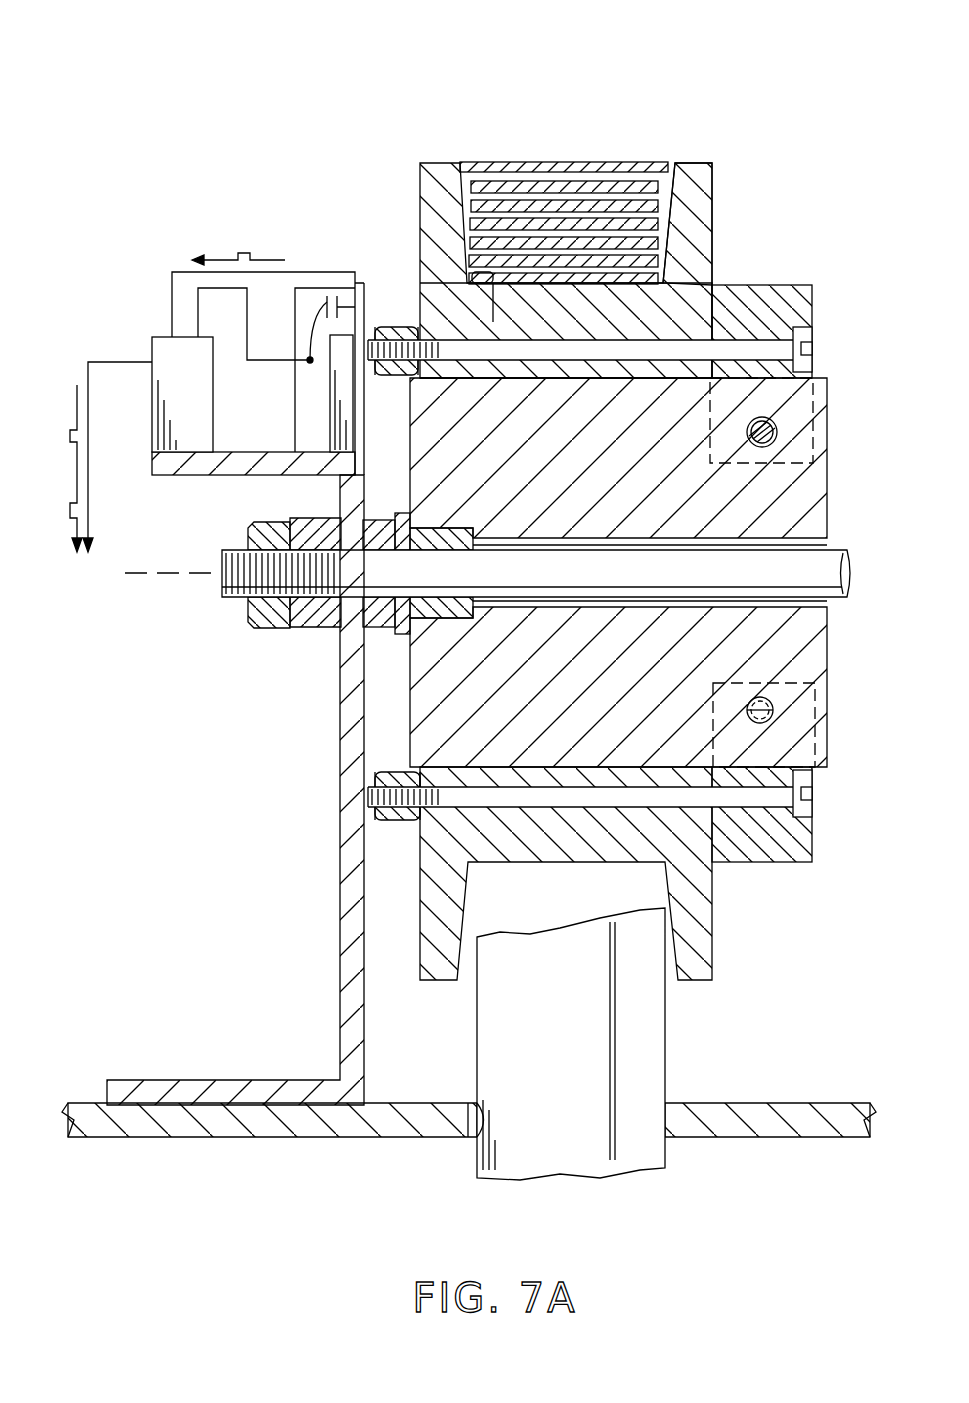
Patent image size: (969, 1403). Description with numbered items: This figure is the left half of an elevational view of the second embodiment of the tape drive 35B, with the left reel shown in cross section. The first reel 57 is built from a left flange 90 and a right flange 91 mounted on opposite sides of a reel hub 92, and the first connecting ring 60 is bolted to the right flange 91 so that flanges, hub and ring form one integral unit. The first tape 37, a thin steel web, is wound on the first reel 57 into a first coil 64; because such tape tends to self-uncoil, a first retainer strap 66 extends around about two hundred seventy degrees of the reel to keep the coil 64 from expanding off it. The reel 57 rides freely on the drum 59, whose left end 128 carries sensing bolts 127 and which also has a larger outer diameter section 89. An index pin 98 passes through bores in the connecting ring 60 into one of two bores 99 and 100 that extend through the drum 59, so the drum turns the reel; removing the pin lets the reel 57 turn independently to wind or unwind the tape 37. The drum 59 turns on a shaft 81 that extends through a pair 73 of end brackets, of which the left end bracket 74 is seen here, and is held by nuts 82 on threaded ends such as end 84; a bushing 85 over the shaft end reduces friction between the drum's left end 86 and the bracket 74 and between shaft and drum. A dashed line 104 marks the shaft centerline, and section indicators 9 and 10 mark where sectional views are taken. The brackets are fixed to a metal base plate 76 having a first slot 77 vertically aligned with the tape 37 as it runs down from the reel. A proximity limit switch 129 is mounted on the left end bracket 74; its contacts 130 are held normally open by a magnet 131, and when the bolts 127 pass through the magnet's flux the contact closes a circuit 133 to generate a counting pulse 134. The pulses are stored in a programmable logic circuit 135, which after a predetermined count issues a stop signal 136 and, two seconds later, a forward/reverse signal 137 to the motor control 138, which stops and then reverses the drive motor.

The tape drive 35B is at (458, 115).
The left flange 90 is at (437, 162).
The right flange 91 is at (695, 162).
The reel hub 92 is at (597, 298).
The first retainer strap 66 is at (565, 162).
The first coil 64 is at (660, 201).
The first reel 57 is at (511, 268).
The first tape 37 is at (655, 240).
The temperature sensor 10 is at (475, 273).
The left end 128 is at (418, 312).
The first connecting ring 60 is at (790, 285).
The section line 9 is at (762, 318).
The sensing bolts 127 is at (393, 378).
The larger outer diameter section 89 is at (803, 395).
The left end 86 is at (410, 734).
The index pin 98 is at (775, 426).
The bore 99 is at (777, 437).
The bore 100 is at (772, 707).
The bushing 85 is at (445, 606).
The threaded end 84 is at (224, 598).
The nuts 82 is at (280, 630).
The shaft 81 is at (762, 597).
The shaft axis 104 is at (150, 578).
The pair of end brackets 73 is at (340, 822).
The left end bracket 74 is at (352, 914).
The base plate 76 is at (222, 1130).
The first slot 77 is at (482, 1110).
The drum 59 is at (822, 768).
The circuit 133 is at (343, 273).
The programmable logic circuit 135 is at (168, 350).
The magnet 131 is at (340, 405).
The proximity limit switch 129 is at (294, 386).
The contacts 130 is at (327, 298).
The counting pulse 134 is at (247, 253).
The motor control 138 is at (104, 483).
The forward/reverse signal 137 is at (70, 430).
The stop signal 136 is at (70, 503).